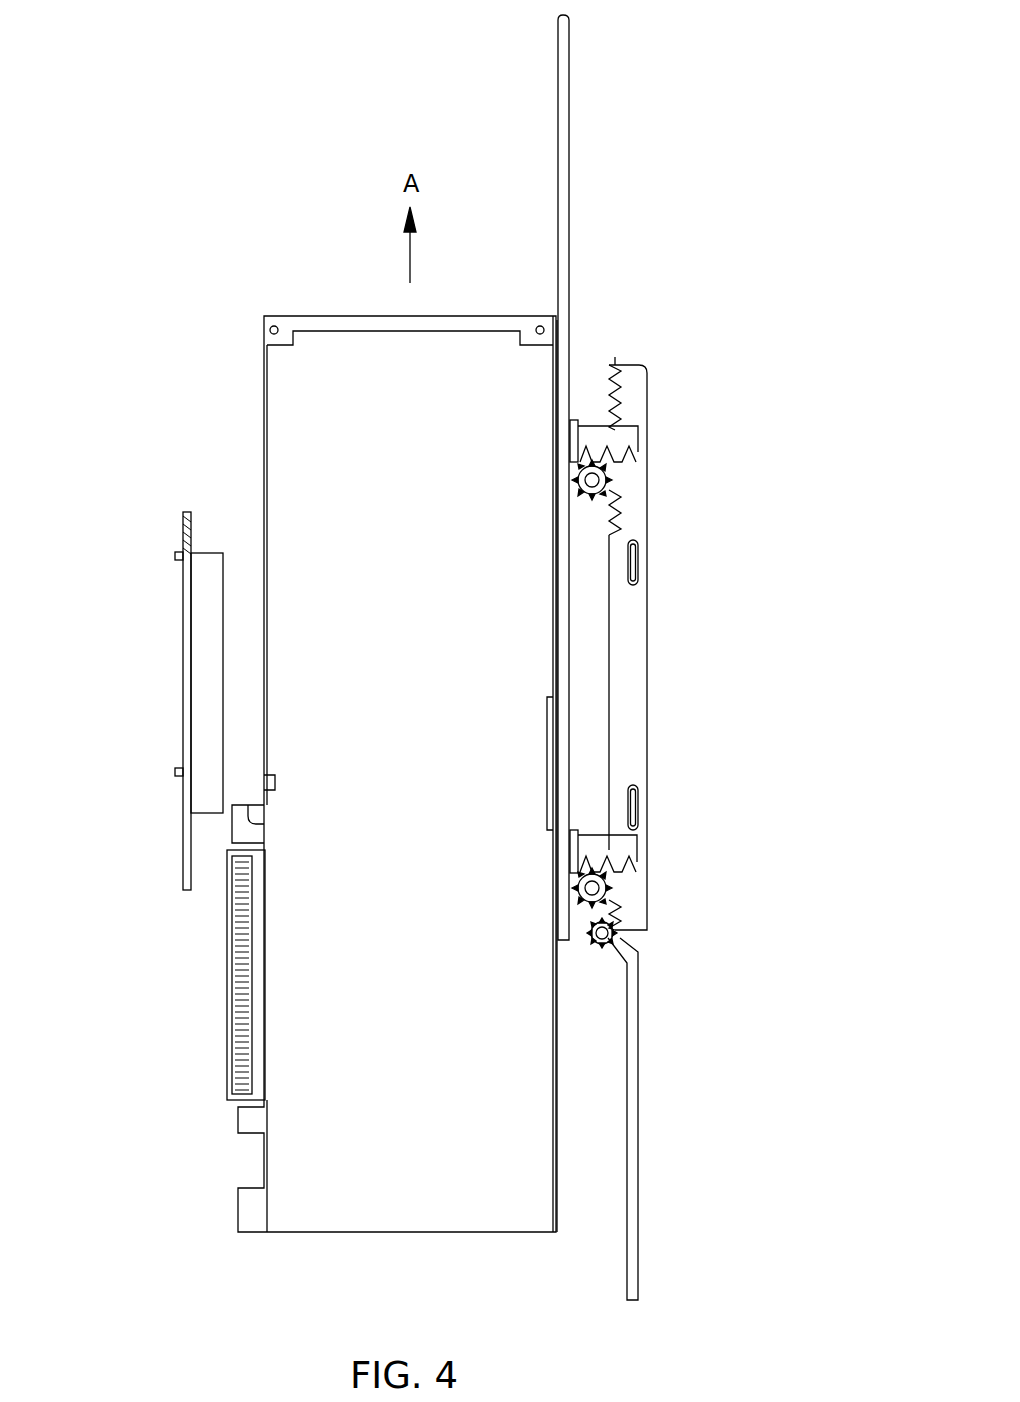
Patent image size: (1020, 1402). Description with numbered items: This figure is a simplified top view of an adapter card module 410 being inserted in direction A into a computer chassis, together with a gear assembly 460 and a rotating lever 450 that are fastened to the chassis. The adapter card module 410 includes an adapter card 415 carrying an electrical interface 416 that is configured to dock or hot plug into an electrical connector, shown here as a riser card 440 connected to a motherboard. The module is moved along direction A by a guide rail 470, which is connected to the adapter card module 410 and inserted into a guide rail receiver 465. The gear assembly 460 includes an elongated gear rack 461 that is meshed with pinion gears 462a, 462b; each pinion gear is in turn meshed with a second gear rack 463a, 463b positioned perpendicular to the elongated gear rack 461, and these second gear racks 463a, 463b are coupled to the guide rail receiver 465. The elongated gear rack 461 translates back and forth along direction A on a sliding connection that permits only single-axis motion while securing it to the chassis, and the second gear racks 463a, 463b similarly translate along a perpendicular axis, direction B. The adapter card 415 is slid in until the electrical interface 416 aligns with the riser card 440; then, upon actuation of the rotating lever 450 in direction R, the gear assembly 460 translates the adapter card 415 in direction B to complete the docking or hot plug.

The adapter card module 410 is at (212, 444).
The adapter card 415 is at (344, 1203).
The electrical interface 416 is at (218, 988).
The riser card 440 is at (184, 862).
The rotating lever 450 is at (640, 1178).
The gear assembly 460 is at (682, 745).
The elongated gear rack 461 is at (641, 666).
The pinion gear 462a is at (601, 485).
The pinion gear 462b is at (601, 892).
The second gear rack 463a is at (640, 436).
The second gear rack 463b is at (640, 841).
The guide rail receiver 465 is at (570, 178).
The guide rail 470 is at (557, 1173).